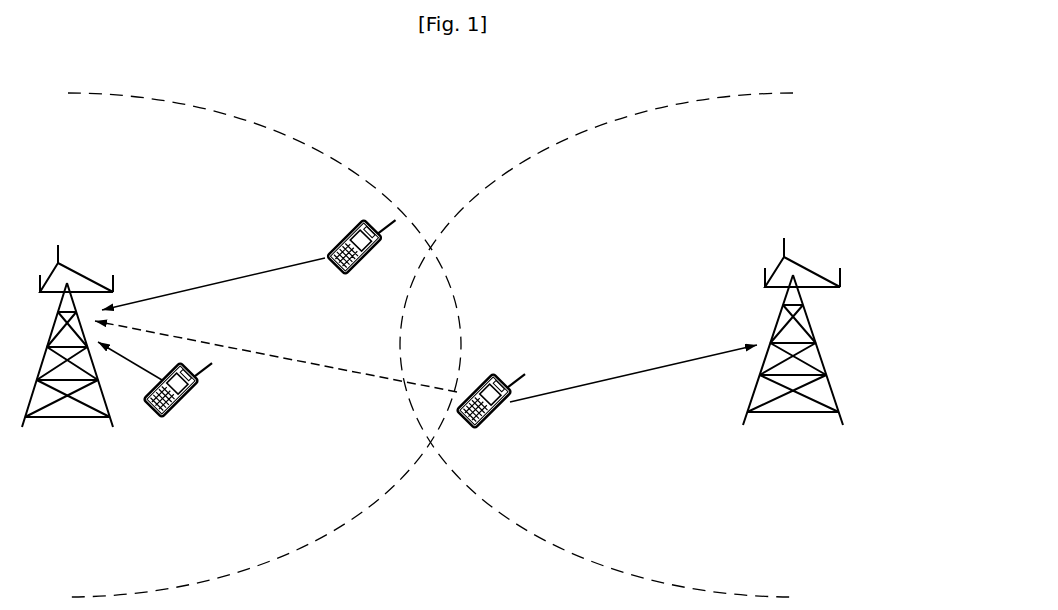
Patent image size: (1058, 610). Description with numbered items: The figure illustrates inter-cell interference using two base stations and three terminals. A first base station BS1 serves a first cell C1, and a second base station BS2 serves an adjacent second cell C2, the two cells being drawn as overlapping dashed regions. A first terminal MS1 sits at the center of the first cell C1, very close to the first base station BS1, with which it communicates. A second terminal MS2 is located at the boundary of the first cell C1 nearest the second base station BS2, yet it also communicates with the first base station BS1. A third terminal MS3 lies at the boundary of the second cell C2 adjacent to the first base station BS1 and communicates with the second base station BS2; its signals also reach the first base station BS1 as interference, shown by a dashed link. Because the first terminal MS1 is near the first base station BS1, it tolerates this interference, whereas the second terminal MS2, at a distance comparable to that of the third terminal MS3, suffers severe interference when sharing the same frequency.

The first base station BS1 is at (67, 356).
The second base station BS2 is at (793, 348).
The first terminal MS1 is at (174, 398).
The second terminal MS2 is at (359, 260).
The third terminal MS3 is at (491, 408).
The first cell C1 is at (282, 133).
The second cell C2 is at (578, 136).